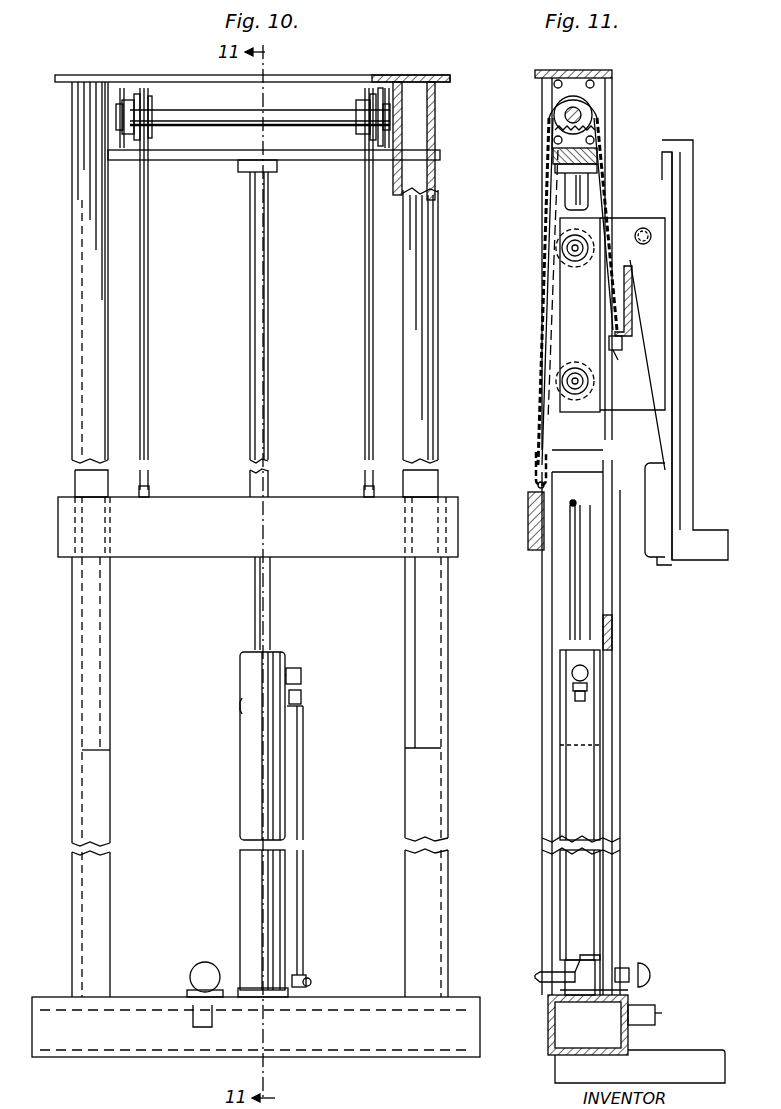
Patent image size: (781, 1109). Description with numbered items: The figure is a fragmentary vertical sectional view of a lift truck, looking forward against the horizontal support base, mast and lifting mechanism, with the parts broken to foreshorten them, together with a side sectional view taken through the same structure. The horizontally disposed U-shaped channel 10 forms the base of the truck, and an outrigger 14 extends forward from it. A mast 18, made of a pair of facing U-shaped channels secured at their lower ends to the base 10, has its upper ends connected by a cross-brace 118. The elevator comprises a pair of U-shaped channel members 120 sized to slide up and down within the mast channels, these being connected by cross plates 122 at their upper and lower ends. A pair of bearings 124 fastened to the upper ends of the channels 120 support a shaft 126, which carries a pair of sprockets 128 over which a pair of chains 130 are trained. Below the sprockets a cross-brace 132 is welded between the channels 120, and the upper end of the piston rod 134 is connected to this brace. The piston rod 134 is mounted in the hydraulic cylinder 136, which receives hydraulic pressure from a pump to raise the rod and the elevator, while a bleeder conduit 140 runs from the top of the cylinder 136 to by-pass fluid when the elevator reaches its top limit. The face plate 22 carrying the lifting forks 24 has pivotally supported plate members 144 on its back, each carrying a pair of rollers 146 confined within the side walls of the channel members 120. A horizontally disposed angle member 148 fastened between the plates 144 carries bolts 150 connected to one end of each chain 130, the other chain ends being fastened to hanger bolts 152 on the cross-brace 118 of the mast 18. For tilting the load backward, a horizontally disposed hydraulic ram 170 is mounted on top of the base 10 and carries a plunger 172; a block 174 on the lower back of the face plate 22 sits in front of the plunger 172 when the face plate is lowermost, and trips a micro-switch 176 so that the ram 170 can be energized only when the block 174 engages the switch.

In FIG. 10, the U-shaped channel 10 is at (254, 1009).
In FIG. 11, the U-shaped channel 10 is at (546, 1025).
In FIG. 11, the outrigger 14 is at (692, 1062).
In FIG. 10, the mast 18 is at (452, 695).
In FIG. 11, the face plate 22 is at (690, 455).
In FIG. 11, the lifting forks 24 is at (692, 511).
In FIG. 10, the cross-brace 118 is at (258, 542).
In FIG. 11, the cross-brace 118 is at (528, 527).
In FIG. 10, the U-shaped channel member 120 is at (82, 310).
In FIG. 10, the cross plate 122 is at (135, 75).
In FIG. 11, the cross plate 122 is at (590, 70).
In FIG. 10, the bearing 124 is at (118, 113).
In FIG. 11, the bearing 124 is at (592, 92).
In FIG. 10, the shaft 126 is at (243, 110).
In FIG. 11, the shaft 126 is at (582, 115).
In FIG. 10, the sprocket 128 is at (120, 124).
In FIG. 11, the sprocket 128 is at (606, 135).
In FIG. 10, the chain 130 is at (148, 300).
In FIG. 11, the chain 130 is at (665, 257).
In FIG. 10, the cross-brace 132 is at (274, 172).
In FIG. 11, the cross-brace 132 is at (560, 172).
In FIG. 10, the piston rod 134 is at (266, 352).
In FIG. 11, the piston rod 134 is at (572, 193).
In FIG. 10, the hydraulic cylinder 136 is at (246, 793).
In FIG. 11, the hydraulic cylinder 136 is at (568, 770).
In FIG. 10, the bleeder conduit 140 is at (302, 822).
In FIG. 11, the plate member 144 is at (570, 336).
In FIG. 11, the roller 146 is at (560, 250).
In FIG. 11, the angle member 148 is at (634, 316).
In FIG. 11, the bolt 150 is at (670, 354).
In FIG. 10, the hanger bolt 152 is at (373, 500).
In FIG. 11, the hanger bolt 152 is at (534, 487).
In FIG. 10, the hydraulic ram 170 is at (204, 963).
In FIG. 11, the hydraulic ram 170 is at (620, 962).
In FIG. 11, the plunger 172 is at (652, 973).
In FIG. 11, the block 174 is at (655, 475).
In FIG. 10, the micro-switch 176 is at (214, 1022).
In FIG. 11, the micro-switch 176 is at (662, 1012).